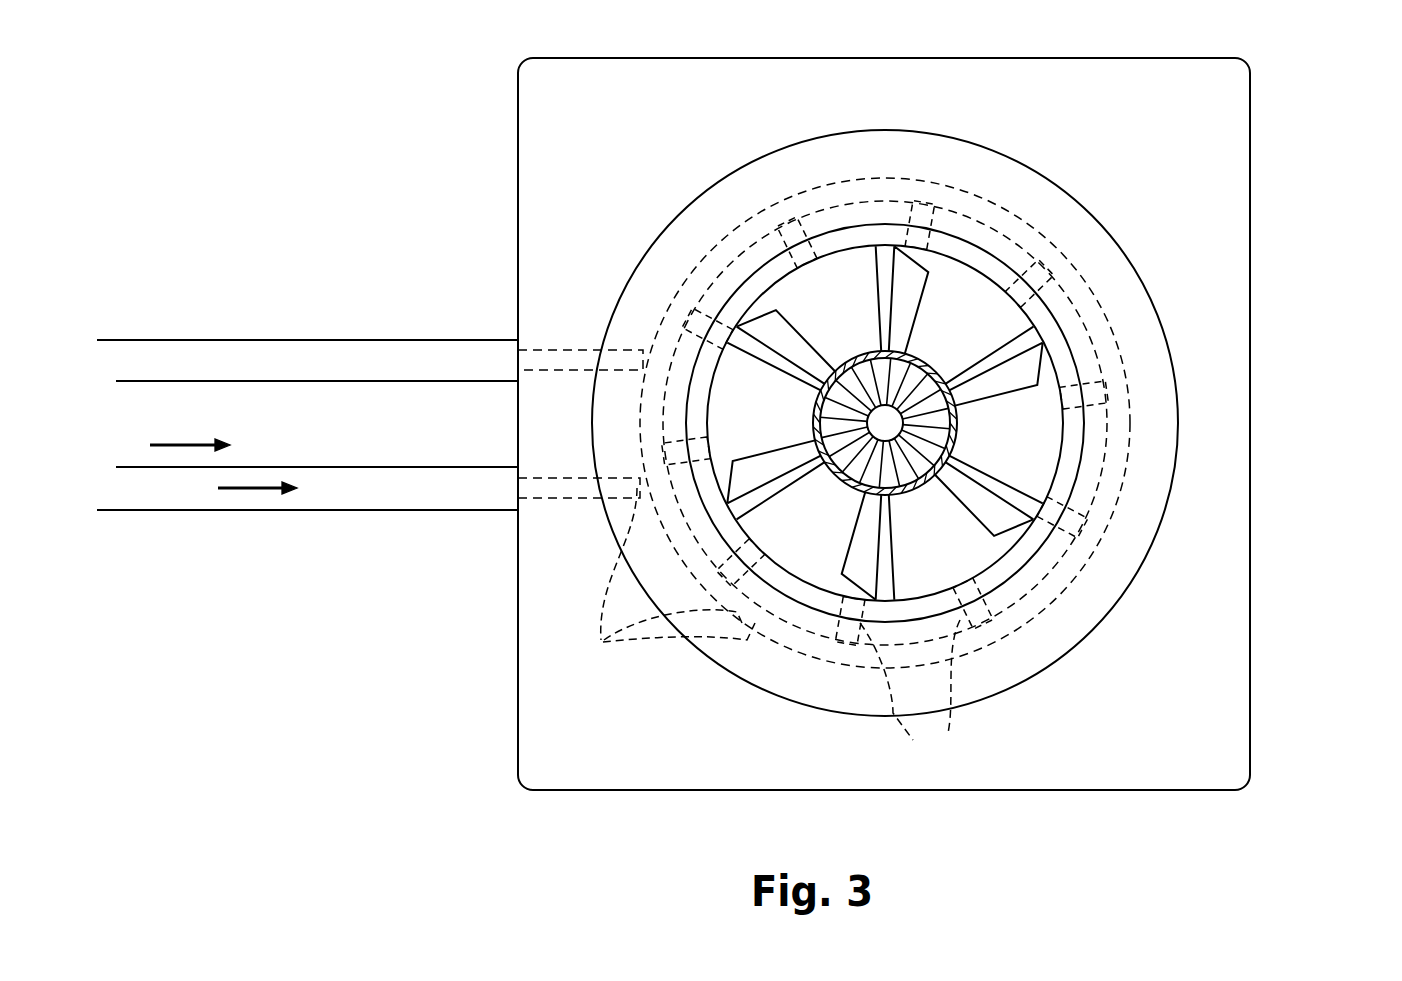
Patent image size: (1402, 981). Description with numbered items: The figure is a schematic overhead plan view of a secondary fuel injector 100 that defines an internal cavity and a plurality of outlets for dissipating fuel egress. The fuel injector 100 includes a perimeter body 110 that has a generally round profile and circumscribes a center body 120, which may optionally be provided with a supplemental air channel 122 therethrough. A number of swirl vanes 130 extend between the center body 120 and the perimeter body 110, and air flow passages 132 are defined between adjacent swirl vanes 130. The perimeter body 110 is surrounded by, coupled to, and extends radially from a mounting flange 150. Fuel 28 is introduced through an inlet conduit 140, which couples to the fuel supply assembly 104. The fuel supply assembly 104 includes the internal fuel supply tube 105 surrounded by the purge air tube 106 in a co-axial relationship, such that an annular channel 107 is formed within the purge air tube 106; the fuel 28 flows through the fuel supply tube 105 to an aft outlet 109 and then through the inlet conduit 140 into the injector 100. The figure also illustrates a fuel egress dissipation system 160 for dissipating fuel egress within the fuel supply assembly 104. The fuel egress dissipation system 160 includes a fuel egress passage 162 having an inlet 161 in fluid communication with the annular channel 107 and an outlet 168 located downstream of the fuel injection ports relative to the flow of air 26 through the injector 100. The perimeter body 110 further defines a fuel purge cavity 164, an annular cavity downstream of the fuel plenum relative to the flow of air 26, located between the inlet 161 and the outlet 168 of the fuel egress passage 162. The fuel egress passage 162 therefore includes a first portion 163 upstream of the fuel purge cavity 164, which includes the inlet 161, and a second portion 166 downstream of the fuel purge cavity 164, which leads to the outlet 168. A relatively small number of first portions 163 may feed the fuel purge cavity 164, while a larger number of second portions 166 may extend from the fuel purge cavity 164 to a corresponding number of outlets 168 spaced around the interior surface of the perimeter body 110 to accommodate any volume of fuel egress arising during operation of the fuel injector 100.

The fuel injector 100 is at (1300, 113).
The fuel supply assembly 104 is at (279, 313).
The fuel supply tube 105 is at (198, 381).
The purge air tube 106 is at (395, 340).
The annular channel 107 is at (322, 374).
The aft outlet 109 is at (518, 425).
The perimeter body 110 is at (1183, 397).
The center body 120 is at (1025, 452).
The supplemental air channel 122 is at (906, 358).
The swirl vanes 130 is at (978, 502).
The air flow passages 132 is at (734, 422).
The inlet conduit 140 is at (545, 512).
The mounting flange 150 is at (545, 700).
The fuel egress dissipation system 160 is at (622, 340).
The inlet 161 is at (518, 345).
The fuel egress passage 162 is at (603, 640).
The first portion 163 is at (612, 487).
The fuel purge cavity 164 is at (712, 655).
The second portion 166 is at (913, 693).
The outlet 168 is at (806, 263).
The air 26 is at (246, 490).
The fuel 28 is at (178, 445).